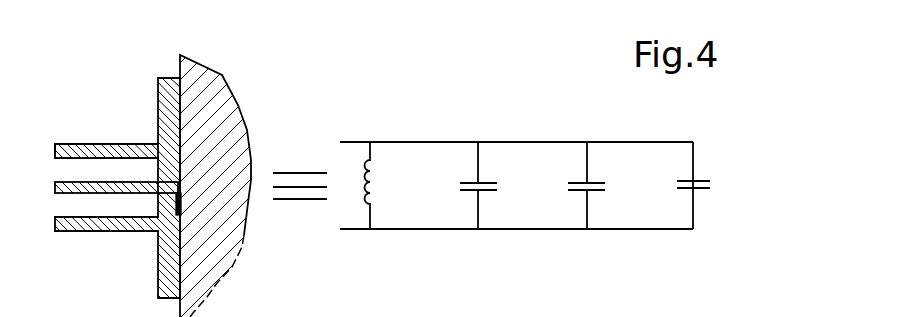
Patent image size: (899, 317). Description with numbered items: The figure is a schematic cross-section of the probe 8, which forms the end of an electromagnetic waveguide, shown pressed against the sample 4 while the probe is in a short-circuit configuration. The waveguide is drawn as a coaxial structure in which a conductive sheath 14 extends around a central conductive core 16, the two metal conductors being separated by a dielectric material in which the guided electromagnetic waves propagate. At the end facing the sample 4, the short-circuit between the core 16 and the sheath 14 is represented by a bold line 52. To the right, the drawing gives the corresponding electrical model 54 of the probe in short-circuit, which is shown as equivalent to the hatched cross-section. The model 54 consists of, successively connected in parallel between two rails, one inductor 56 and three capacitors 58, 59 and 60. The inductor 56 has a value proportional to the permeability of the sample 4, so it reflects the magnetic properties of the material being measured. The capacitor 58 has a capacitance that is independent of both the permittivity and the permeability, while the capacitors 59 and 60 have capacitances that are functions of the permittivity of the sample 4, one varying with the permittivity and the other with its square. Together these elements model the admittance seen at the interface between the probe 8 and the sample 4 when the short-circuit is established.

The sample 4 is at (211, 70).
The probe 8 is at (159, 66).
The central conductive core 16 is at (95, 143).
The conductive sheath 14 is at (55, 188).
The bold line 52 is at (177, 200).
The model 54 is at (690, 106).
The inductor 56 is at (370, 205).
The capacitor 58 is at (478, 196).
The capacitor 59 is at (587, 196).
The capacitor 60 is at (703, 193).